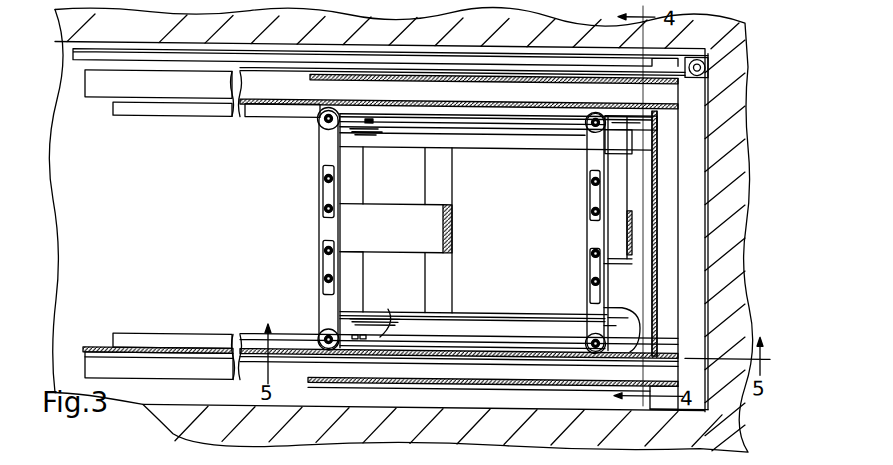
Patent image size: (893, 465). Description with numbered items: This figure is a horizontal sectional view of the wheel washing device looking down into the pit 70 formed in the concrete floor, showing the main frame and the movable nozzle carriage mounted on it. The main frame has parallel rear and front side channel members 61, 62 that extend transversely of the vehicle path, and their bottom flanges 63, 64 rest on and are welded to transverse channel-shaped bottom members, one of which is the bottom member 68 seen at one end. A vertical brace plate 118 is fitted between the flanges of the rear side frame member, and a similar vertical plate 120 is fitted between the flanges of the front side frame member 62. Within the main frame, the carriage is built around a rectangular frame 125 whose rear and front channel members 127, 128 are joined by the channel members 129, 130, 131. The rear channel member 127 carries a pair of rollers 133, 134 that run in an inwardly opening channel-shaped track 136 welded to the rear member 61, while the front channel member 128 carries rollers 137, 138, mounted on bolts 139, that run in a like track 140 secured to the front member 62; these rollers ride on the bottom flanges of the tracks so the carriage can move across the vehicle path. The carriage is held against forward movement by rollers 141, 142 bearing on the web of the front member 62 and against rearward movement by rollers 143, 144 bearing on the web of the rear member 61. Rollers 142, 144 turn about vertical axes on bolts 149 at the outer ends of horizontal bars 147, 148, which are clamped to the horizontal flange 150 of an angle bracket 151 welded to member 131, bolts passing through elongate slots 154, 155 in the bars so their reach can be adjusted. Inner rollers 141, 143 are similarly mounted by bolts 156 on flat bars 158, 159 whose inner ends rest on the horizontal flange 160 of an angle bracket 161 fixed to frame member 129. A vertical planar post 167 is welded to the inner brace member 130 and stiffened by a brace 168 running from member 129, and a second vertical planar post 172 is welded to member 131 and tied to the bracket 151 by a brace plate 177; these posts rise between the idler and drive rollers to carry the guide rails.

The rear side channel member 61 is at (93, 343).
The front side channel member 62 is at (248, 97).
The bottom flange 63 is at (143, 368).
The bottom flange 64 is at (92, 88).
The bottom member 68 is at (655, 396).
The pit 70 is at (50, 287).
The vertical brace plate 118 is at (460, 383).
The vertical plate 120 is at (498, 78).
The rectangular frame 125 is at (415, 334).
The rear channel member 127 is at (490, 297).
The front channel member 128 is at (507, 139).
The channel member 129 is at (355, 296).
The channel member 130 is at (449, 289).
The channel member 131 is at (625, 162).
The roller 133 is at (381, 333).
The roller 134 is at (628, 311).
The channel shaped track 136 is at (147, 333).
The roller 137 is at (374, 114).
The roller 138 is at (634, 93).
The bolt 139 is at (381, 129).
The channel shaped track 140 is at (362, 103).
The roller 141 is at (313, 104).
The roller 142 is at (576, 123).
The roller 143 is at (318, 330).
The roller 144 is at (585, 358).
The horizontal bar 147 is at (588, 152).
The horizontal bar 148 is at (587, 300).
The bolt 149 is at (593, 105).
The horizontal flange 150 is at (590, 228).
The angle bracket 151 is at (633, 207).
The elongate slot 154 is at (586, 184).
The elongate slot 155 is at (587, 258).
The bolt 156 is at (320, 119).
The flat bar 158 is at (323, 138).
The flat bar 159 is at (323, 295).
The horizontal flange 160 is at (323, 221).
The angle bracket 161 is at (340, 227).
The vertical planar post 167 is at (452, 225).
The brace 168 is at (427, 214).
The vertical planar post 172 is at (632, 221).
The brace plate 177 is at (613, 247).